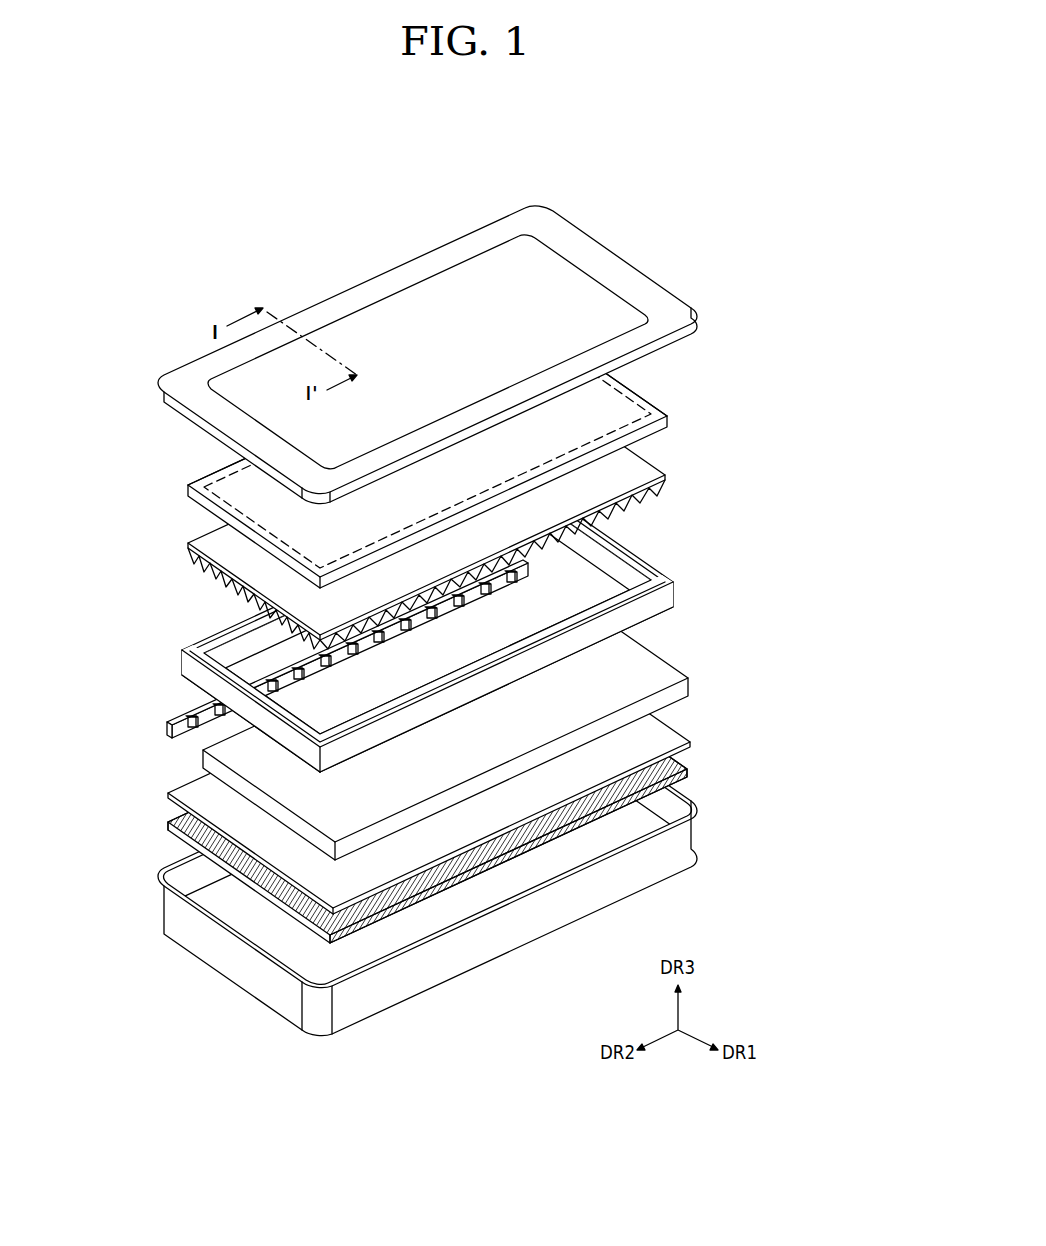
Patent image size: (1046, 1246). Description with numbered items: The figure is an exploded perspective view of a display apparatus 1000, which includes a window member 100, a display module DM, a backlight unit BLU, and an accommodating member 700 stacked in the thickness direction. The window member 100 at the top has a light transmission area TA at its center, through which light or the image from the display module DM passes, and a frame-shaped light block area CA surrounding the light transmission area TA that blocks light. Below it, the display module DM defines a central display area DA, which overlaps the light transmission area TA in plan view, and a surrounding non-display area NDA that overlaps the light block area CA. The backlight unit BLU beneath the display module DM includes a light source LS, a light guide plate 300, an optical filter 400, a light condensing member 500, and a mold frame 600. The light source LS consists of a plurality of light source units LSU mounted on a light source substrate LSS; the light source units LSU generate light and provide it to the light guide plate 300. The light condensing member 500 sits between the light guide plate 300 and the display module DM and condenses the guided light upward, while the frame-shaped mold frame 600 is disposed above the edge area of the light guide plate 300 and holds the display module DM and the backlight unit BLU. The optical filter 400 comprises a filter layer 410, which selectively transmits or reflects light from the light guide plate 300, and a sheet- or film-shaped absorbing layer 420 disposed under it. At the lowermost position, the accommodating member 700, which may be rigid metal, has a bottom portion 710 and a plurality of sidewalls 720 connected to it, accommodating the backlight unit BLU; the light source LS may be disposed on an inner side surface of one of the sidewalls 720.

The display apparatus 1000 is at (463, 586).
The window member 100 is at (474, 347).
The light transmission area TA is at (437, 288).
The light block area CA is at (374, 293).
The display module DM is at (428, 456).
The display area DA is at (224, 485).
The non-display area NDA is at (241, 513).
The backlight unit BLU is at (463, 663).
The light condensing member 500 is at (500, 516).
The mold frame 600 is at (436, 629).
The light source LS is at (294, 649).
The light source substrate LSS is at (205, 708).
The light source units LSU is at (192, 723).
The light guide plate 300 is at (684, 691).
The optical filter 400 is at (490, 785).
The filter layer 410 is at (667, 738).
The absorbing layer 420 is at (680, 768).
The accommodating member 700 is at (484, 867).
The bottom portion 710 is at (650, 826).
The sidewalls 720 is at (681, 850).